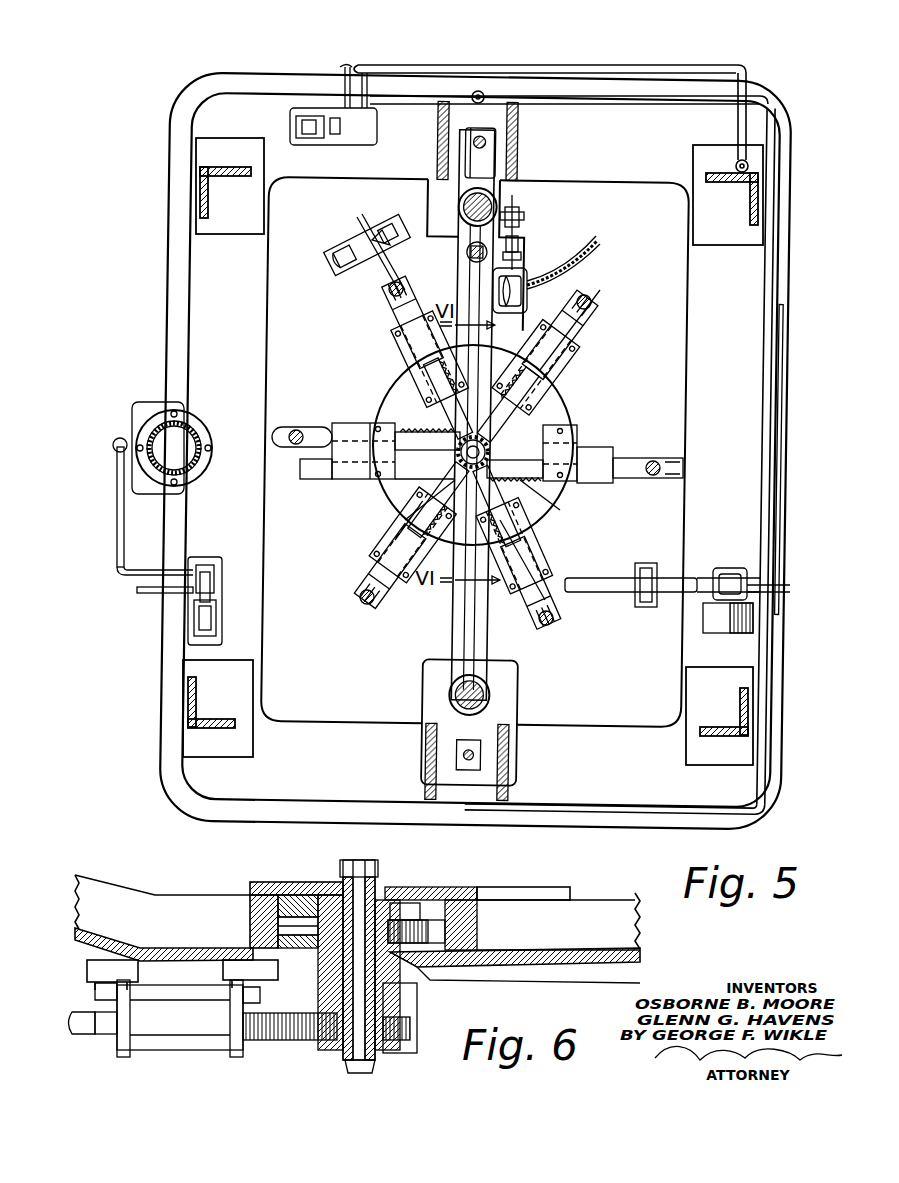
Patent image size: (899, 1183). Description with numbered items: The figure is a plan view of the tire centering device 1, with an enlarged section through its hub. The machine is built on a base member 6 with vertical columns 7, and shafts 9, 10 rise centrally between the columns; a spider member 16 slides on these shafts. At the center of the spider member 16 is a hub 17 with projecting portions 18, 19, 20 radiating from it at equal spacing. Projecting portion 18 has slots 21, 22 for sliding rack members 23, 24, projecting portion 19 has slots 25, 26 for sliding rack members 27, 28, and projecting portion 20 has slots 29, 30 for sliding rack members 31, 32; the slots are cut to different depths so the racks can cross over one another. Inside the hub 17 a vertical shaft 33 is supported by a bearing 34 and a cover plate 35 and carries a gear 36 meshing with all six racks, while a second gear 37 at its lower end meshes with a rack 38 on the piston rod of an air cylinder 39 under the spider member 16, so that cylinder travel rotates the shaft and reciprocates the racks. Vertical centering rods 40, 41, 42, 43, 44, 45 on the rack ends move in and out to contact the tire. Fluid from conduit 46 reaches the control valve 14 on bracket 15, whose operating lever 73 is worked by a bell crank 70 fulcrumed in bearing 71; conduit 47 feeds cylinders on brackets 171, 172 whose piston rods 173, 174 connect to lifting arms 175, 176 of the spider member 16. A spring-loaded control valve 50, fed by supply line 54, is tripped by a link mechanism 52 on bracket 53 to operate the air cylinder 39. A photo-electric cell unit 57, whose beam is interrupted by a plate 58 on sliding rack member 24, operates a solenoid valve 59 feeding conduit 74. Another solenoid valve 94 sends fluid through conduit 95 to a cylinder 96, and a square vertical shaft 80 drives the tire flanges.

In FIG. 5, the tire centering device 1 is at (315, 322).
In FIG. 5, the base member 6 is at (236, 102).
In FIG. 5, the vertical columns 7 is at (210, 167).
In FIG. 5, the shaft 9 is at (487, 694).
In FIG. 5, the shaft 10 is at (462, 205).
In FIG. 5, the control valve 14 is at (745, 572).
In FIG. 5, the bracket 15 is at (750, 620).
In FIG. 5, the spider member 16 is at (456, 640).
In FIG. 5, the hub 17 is at (400, 510).
In FIG. 6, the hub 17 is at (262, 908).
In FIG. 5, the projecting portion 18 is at (535, 565).
In FIG. 5, the projecting portion 19 is at (565, 360).
In FIG. 5, the projecting portion 20 is at (340, 470).
In FIG. 5, the slot 21 is at (420, 420).
In FIG. 5, the slot 22 is at (540, 495).
In FIG. 5, the sliding rack member 23 is at (536, 600).
In FIG. 6, the sliding rack member 23 is at (462, 893).
In FIG. 5, the sliding rack member 24 is at (405, 300).
In FIG. 6, the sliding rack member 24 is at (292, 905).
In FIG. 5, the slot 25 is at (400, 520).
In FIG. 5, the slot 26 is at (500, 430).
In FIG. 5, the sliding rack member 27 is at (578, 328).
In FIG. 6, the sliding rack member 27 is at (430, 930).
In FIG. 5, the sliding rack member 28 is at (380, 585).
In FIG. 5, the slot 29 is at (560, 430).
In FIG. 5, the slot 30 is at (395, 490).
In FIG. 5, the sliding rack member 31 is at (315, 444).
In FIG. 6, the sliding rack member 31 is at (290, 940).
In FIG. 5, the sliding rack member 32 is at (630, 462).
In FIG. 6, the sliding rack member 32 is at (435, 975).
In FIG. 6, the vertical shaft 33 is at (355, 870).
In FIG. 6, the bearing 34 is at (378, 1005).
In FIG. 6, the cover plate 35 is at (432, 887).
In FIG. 6, the gear 36 is at (400, 903).
In FIG. 6, the second gear 37 is at (380, 1055).
In FIG. 6, the rack 38 is at (292, 1040).
In FIG. 6, the air cylinder 39 is at (195, 1045).
In FIG. 5, the centering rod 40 is at (556, 622).
In FIG. 5, the centering rod 41 is at (358, 598).
In FIG. 5, the centering rod 42 is at (298, 430).
In FIG. 5, the centering rod 43 is at (388, 292).
In FIG. 5, the centering rod 44 is at (593, 301).
In FIG. 5, the centering rod 45 is at (653, 476).
In FIG. 5, the conduit 46 is at (774, 696).
In FIG. 5, the conduit 47 is at (788, 130).
In FIG. 5, the control valve 50 is at (529, 296).
In FIG. 5, the link mechanism 52 is at (522, 246).
In FIG. 5, the bracket 53 is at (522, 217).
In FIG. 5, the supply line 54 is at (595, 252).
In FIG. 5, the photo-electric cell unit 57 is at (352, 250).
In FIG. 5, the plate 58 is at (366, 220).
In FIG. 5, the solenoid valve 59 is at (340, 110).
In FIG. 5, the bell crank 70 is at (600, 592).
In FIG. 5, the bearing 71 is at (648, 605).
In FIG. 5, the operating lever 73 is at (708, 578).
In FIG. 5, the conduit 74 is at (540, 66).
In FIG. 5, the vertical shaft 80 is at (465, 252).
In FIG. 5, the solenoid valve 94 is at (192, 600).
In FIG. 5, the conduit 95 is at (130, 575).
In FIG. 5, the cylinder 96 is at (160, 425).
In FIG. 5, the bracket 171 is at (520, 128).
In FIG. 5, the bracket 172 is at (428, 745).
In FIG. 5, the piston rod 173 is at (477, 136).
In FIG. 5, the piston rod 174 is at (486, 755).
In FIG. 5, the lifting arm 175 is at (480, 170).
In FIG. 5, the lifting arm 176 is at (512, 750).